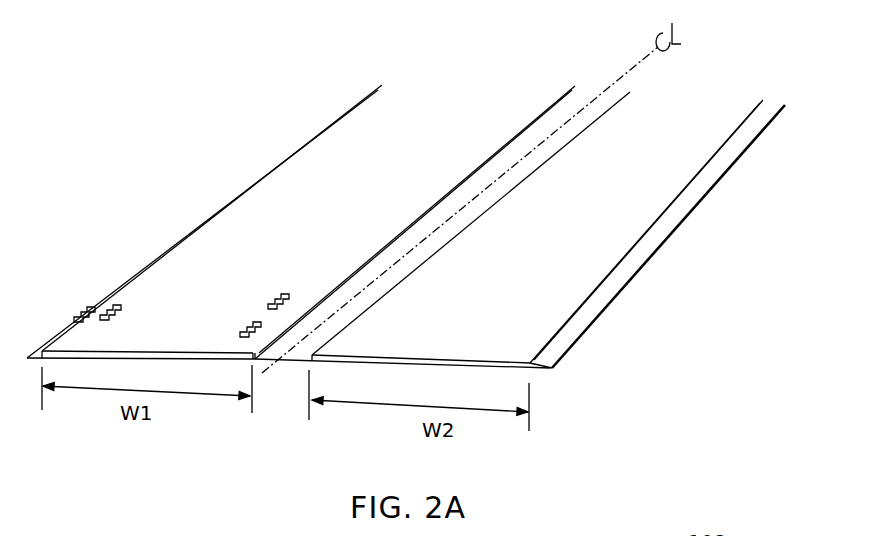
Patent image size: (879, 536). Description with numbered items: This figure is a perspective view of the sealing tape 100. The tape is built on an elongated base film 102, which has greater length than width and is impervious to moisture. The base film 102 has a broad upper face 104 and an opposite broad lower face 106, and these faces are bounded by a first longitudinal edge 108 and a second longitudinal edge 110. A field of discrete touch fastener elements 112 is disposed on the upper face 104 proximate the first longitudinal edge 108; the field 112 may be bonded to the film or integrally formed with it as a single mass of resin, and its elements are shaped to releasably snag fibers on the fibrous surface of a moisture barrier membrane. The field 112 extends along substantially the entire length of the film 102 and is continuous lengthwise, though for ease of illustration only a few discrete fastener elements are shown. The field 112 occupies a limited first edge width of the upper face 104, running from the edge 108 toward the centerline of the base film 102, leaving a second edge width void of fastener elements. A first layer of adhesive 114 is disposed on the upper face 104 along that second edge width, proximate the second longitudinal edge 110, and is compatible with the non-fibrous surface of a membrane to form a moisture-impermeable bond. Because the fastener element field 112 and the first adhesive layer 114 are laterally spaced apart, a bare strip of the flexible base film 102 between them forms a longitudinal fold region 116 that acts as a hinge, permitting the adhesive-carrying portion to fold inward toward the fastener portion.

The sealing tape 100 is at (193, 148).
The base film 102 is at (580, 352).
The upper face 104 is at (740, 145).
The lower face 106 is at (710, 190).
The first longitudinal edge 108 is at (168, 249).
The second longitudinal edge 110 is at (648, 262).
The field of discrete touch fastener elements 112 is at (350, 175).
The first layer of adhesive 114 is at (553, 310).
The longitudinal fold region 116 is at (282, 365).